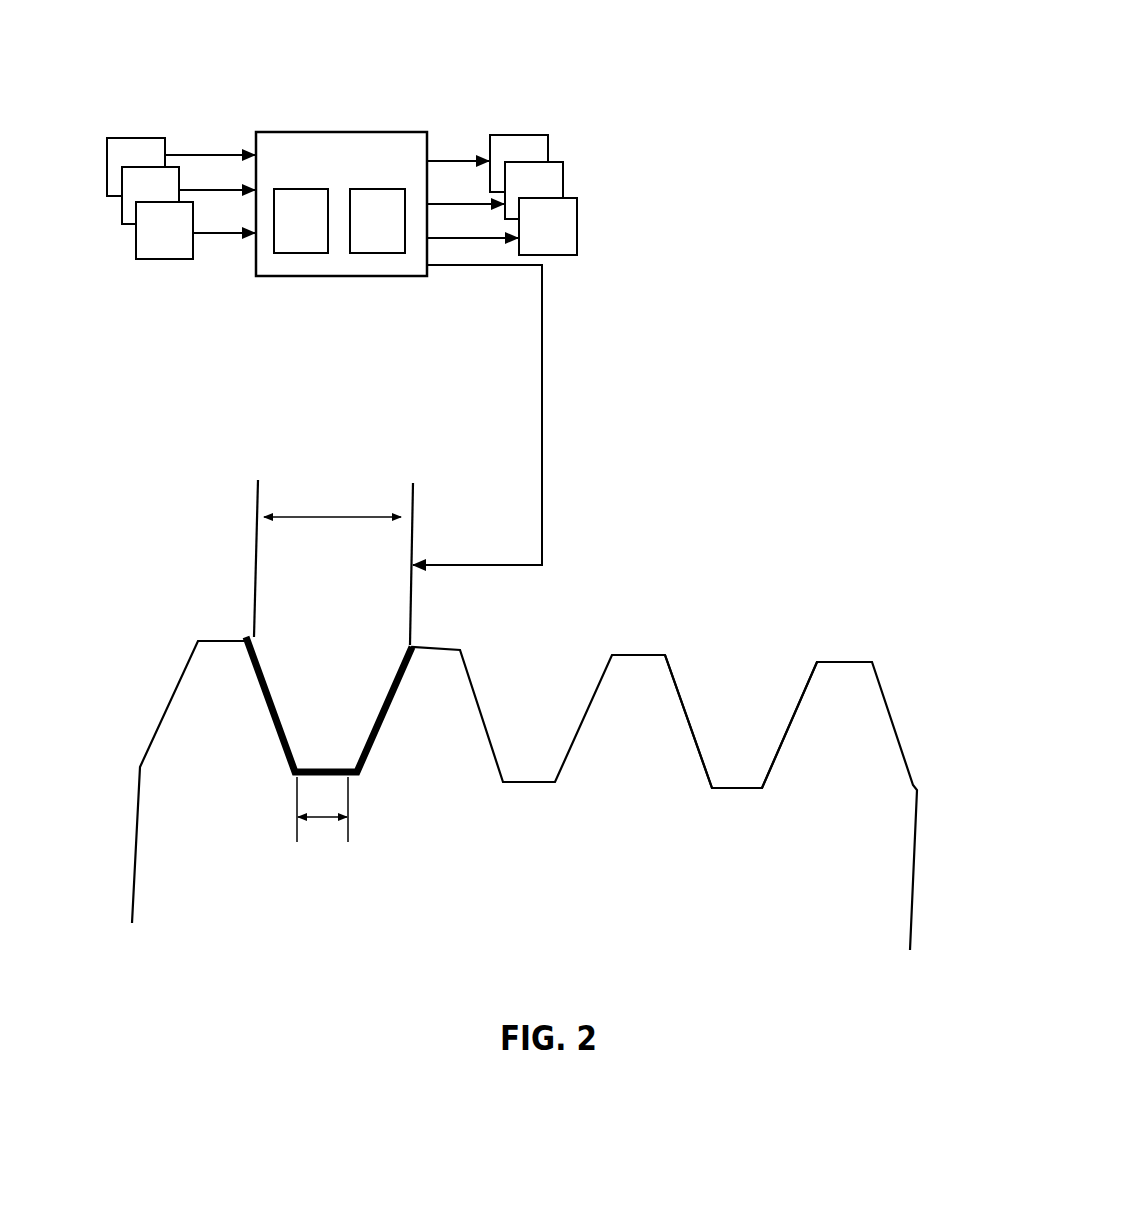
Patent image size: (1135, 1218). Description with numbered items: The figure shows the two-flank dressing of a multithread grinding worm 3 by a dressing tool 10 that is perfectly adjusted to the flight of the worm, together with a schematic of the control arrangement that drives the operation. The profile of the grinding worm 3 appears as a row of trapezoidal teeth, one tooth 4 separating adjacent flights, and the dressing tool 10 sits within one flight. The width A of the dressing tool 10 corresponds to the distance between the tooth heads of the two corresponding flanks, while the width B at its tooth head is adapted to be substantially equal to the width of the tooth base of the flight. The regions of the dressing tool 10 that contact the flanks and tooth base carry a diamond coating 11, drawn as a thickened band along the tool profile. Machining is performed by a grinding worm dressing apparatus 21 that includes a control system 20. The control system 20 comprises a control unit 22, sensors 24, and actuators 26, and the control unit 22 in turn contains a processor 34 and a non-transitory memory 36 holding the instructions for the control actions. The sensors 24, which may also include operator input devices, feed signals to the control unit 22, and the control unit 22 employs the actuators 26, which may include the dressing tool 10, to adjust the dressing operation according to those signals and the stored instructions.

The gear 3 is at (534, 685).
The gear tooth 4 is at (741, 696).
The dressing tool 10 is at (412, 560).
The diamond coating 11 is at (260, 695).
The control system 20 is at (345, 320).
The grinding worm dressing apparatus 21 is at (770, 95).
The control unit 22 is at (356, 173).
The sensors 24 is at (132, 138).
The actuators 26 is at (516, 135).
The processor 34 is at (391, 221).
The non-transitory memory 36 is at (314, 221).